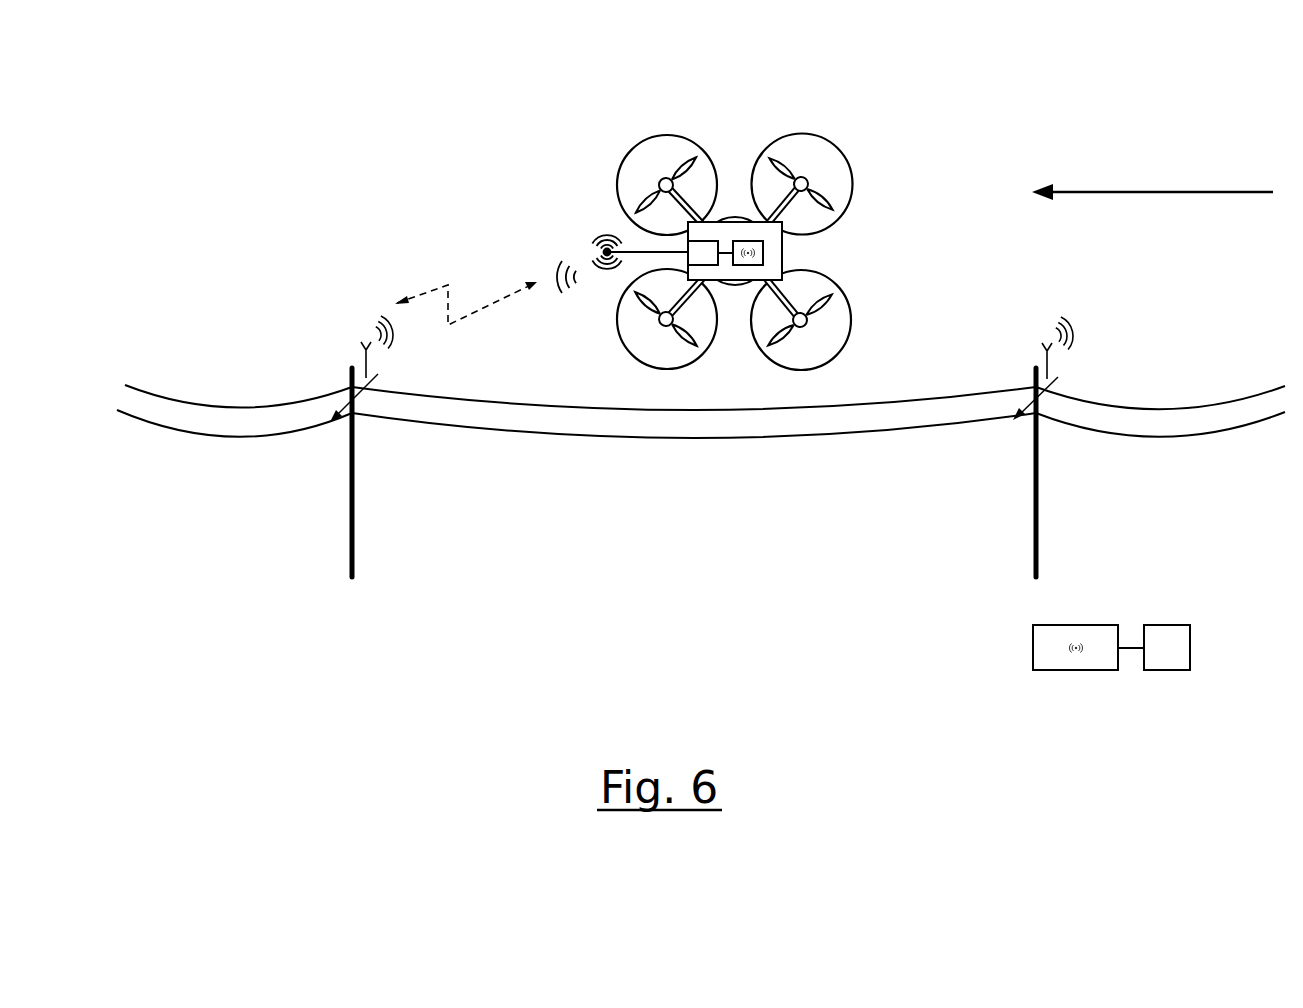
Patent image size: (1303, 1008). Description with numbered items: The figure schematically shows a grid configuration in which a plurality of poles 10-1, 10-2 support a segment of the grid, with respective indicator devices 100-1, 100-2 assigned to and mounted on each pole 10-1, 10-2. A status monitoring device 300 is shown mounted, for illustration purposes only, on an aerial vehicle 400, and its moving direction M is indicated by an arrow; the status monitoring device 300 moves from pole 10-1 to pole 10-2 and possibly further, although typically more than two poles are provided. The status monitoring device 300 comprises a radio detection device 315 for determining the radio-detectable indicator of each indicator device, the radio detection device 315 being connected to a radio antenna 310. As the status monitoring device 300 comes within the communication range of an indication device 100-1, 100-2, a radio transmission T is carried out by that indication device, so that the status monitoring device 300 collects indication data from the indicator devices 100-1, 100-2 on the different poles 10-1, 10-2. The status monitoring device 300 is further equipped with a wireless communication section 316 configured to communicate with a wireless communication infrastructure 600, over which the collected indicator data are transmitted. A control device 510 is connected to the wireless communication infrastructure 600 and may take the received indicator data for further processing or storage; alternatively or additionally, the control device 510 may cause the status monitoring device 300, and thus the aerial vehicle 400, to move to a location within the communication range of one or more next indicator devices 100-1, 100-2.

The aerial vehicle 400 is at (726, 239).
The status monitoring device 300 is at (791, 245).
The radio detection device 315 is at (713, 241).
The wireless communication section 316 is at (738, 265).
The radio antenna 310 is at (598, 238).
The indicator device 100-1 is at (1045, 348).
The indicator device 100-2 is at (365, 347).
The pole 10-1 is at (1033, 513).
The pole 10-2 is at (350, 513).
The wireless communication infrastructure 600 is at (1033, 647).
The control device 510 is at (1162, 670).
The radio transmission T is at (432, 290).
The moving direction M is at (1163, 192).